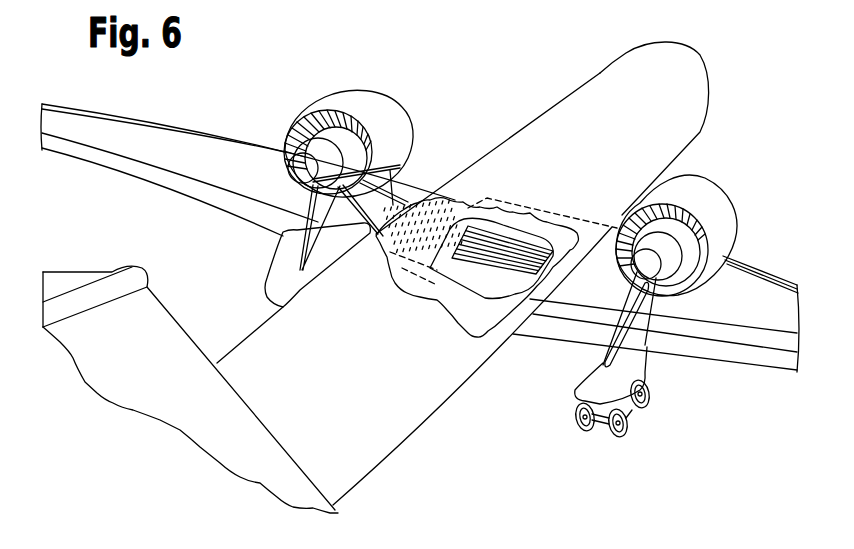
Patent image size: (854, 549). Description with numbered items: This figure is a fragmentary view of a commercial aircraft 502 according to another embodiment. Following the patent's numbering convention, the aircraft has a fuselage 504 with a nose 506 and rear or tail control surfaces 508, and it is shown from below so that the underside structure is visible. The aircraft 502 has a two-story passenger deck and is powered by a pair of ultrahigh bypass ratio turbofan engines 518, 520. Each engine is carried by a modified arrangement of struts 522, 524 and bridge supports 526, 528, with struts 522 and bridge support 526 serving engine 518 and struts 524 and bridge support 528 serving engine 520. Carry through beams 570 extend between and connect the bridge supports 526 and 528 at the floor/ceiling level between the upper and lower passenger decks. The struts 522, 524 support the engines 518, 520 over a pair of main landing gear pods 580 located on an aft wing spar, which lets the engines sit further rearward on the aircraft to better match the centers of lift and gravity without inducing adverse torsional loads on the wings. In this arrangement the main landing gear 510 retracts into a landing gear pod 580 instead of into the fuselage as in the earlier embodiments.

The commercial aircraft 502 is at (773, 130).
The fuselage 504 is at (387, 434).
The nose 506 is at (707, 76).
The tail control surfaces 508 is at (158, 377).
The main landing gear 510 is at (627, 433).
The engine 518 is at (367, 96).
The engine 520 is at (728, 220).
The strut 522 is at (280, 251).
The strut 524 is at (640, 344).
The bridge support 526 is at (410, 187).
The bridge support 528 is at (592, 229).
The carry through beam 570 is at (512, 232).
The main landing gear pod 580 is at (273, 287).